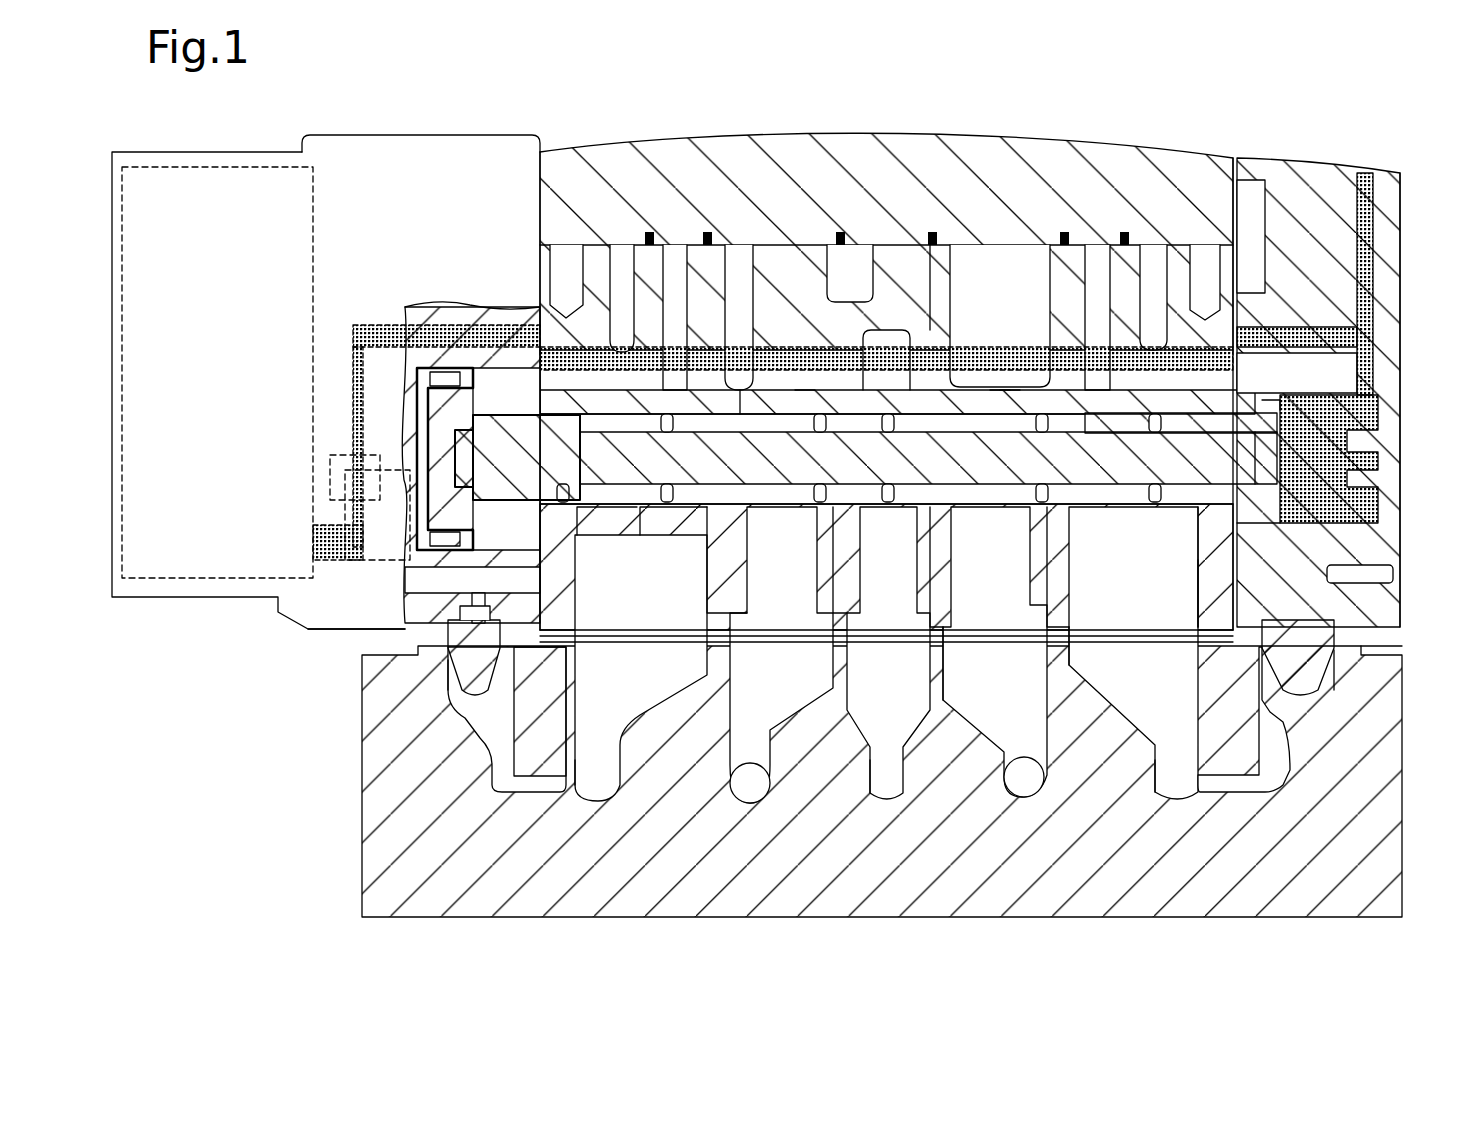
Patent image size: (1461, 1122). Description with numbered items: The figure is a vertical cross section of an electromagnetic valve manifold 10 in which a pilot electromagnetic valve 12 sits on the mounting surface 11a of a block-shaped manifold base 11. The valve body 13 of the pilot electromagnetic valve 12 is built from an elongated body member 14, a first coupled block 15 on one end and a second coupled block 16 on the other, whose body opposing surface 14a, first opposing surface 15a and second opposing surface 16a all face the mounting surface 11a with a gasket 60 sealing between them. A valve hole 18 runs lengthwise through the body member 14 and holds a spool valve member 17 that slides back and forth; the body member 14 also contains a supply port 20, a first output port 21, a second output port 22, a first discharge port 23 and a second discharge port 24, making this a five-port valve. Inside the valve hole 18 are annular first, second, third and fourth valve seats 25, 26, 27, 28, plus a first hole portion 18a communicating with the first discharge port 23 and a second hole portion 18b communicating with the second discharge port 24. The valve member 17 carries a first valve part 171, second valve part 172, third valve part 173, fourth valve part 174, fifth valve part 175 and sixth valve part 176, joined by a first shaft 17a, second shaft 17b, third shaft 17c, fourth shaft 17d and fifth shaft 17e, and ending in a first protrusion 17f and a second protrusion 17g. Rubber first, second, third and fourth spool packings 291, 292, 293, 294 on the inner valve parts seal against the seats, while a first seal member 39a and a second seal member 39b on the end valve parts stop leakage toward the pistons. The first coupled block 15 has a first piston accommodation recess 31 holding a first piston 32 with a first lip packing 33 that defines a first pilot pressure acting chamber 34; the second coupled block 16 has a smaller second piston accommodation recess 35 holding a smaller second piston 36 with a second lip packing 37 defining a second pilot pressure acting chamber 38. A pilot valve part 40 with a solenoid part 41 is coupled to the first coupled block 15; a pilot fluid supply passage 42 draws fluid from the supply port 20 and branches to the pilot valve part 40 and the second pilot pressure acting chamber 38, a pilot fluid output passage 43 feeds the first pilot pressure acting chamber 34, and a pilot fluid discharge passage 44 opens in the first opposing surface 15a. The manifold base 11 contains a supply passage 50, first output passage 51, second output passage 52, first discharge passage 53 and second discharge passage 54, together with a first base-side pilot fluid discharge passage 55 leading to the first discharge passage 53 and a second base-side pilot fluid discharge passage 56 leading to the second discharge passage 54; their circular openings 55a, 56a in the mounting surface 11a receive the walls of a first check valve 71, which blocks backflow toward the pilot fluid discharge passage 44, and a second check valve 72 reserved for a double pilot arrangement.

The electromagnetic valve manifold 10 is at (1386, 104).
The manifold base 11 is at (362, 800).
The mounting surface 11a is at (968, 630).
The pilot electromagnetic valve 12 is at (1290, 142).
The valve body 13 is at (1345, 172).
The body member 14 is at (868, 245).
The body opposing surface 14a is at (1108, 630).
The first coupled block 15 is at (462, 135).
The first opposing surface 15a is at (415, 631).
The second coupled block 16 is at (1253, 157).
The second opposing surface 16a is at (1385, 640).
The valve member 17 is at (770, 475).
The first shaft 17a is at (875, 440).
The second shaft 17b is at (760, 346).
The third shaft 17c is at (1000, 440).
The fourth shaft 17d is at (592, 410).
The fifth shaft 17e is at (1085, 360).
The first protrusion 17f is at (495, 410).
The second protrusion 17g is at (1220, 440).
The first valve part 171 is at (870, 395).
The second valve part 172 is at (650, 420).
The third valve part 173 is at (935, 330).
The fourth valve part 174 is at (1000, 390).
The fifth valve part 175 is at (530, 420).
The sixth valve part 176 is at (1170, 400).
The valve hole 18 is at (980, 505).
The first hole portion 18a is at (598, 505).
The second hole portion 18b is at (1166, 505).
The supply port 20 is at (882, 620).
The first output port 21 is at (770, 620).
The second output port 22 is at (1010, 620).
The first discharge port 23 is at (660, 620).
The second discharge port 24 is at (1165, 620).
The first valve seat 25 is at (878, 510).
The second valve seat 26 is at (745, 530).
The third valve seat 27 is at (962, 510).
The fourth valve seat 28 is at (1085, 510).
The first spool packing 291 is at (800, 400).
The second spool packing 292 is at (667, 505).
The third spool packing 293 is at (905, 290).
The fourth spool packing 294 is at (1010, 400).
The first piston accommodation recess 31 is at (410, 520).
The first piston 32 is at (410, 470).
The first lip packing 33 is at (430, 330).
The first pilot pressure acting chamber 34 is at (420, 385).
The second piston accommodation recess 35 is at (1340, 575).
The second piston 36 is at (1290, 500).
The second lip packing 37 is at (1275, 405).
The second pilot pressure acting chamber 38 is at (1335, 495).
The first seal member 39a is at (560, 560).
The second seal member 39b is at (1185, 560).
The pilot valve part 40 is at (163, 138).
The solenoid part 41 is at (230, 165).
The pilot fluid supply passage 42 is at (738, 360).
The pilot fluid output passage 43 is at (430, 440).
The pilot fluid discharge passage 44 is at (470, 607).
The supply passage 50 is at (868, 740).
The first output passage 51 is at (765, 755).
The second output passage 52 is at (990, 720).
The first discharge passage 53 is at (627, 710).
The second discharge passage 54 is at (1110, 710).
The first base-side pilot fluid discharge passage 55 is at (470, 725).
The opening 55a is at (470, 670).
The second base-side pilot fluid discharge passage 56 is at (1290, 707).
The opening 56a is at (1305, 690).
The gasket 60 is at (566, 670).
The first check valve 71 is at (475, 700).
The second check valve 72 is at (1320, 700).